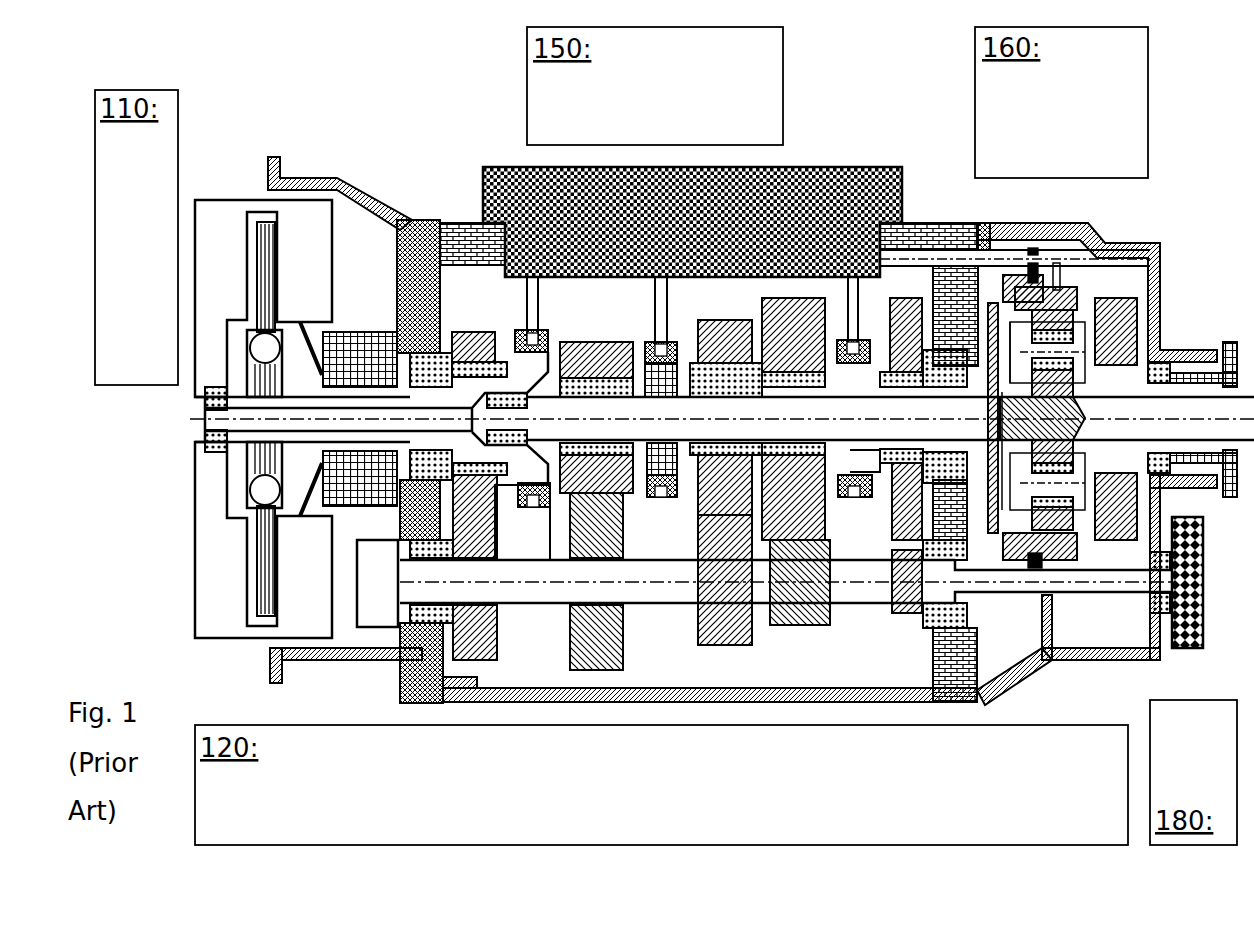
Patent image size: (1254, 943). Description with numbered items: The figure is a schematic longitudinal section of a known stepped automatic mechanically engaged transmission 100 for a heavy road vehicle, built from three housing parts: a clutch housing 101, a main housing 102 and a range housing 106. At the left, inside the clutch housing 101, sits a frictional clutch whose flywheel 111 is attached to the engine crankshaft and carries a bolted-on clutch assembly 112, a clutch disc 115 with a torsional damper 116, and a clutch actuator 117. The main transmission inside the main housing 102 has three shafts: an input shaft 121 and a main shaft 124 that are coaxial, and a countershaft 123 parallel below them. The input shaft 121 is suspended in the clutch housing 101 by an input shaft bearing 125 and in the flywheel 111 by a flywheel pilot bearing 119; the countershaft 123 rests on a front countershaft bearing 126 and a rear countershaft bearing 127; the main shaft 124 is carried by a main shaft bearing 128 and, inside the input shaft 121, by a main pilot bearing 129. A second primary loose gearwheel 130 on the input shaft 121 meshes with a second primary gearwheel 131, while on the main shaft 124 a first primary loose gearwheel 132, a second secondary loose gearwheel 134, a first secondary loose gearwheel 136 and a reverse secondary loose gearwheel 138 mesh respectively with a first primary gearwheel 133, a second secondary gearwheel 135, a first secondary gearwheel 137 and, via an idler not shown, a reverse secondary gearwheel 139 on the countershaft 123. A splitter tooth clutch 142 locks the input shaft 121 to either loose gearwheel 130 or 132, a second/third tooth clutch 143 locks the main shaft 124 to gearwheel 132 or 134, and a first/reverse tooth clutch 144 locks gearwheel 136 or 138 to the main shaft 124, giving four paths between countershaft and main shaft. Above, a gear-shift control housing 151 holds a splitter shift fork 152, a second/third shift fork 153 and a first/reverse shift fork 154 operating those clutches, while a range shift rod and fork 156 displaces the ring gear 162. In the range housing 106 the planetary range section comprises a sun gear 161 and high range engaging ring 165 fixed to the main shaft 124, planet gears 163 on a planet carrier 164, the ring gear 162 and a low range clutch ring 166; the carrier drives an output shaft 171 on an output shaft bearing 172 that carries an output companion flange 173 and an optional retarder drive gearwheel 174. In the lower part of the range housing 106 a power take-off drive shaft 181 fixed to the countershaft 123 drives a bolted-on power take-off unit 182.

The stepped automatic mechanically engaged transmission 100 is at (715, 368).
The clutch housing 101 is at (714, 381).
The main housing 102 is at (715, 161).
The range housing 106 is at (953, 270).
The flywheel 111 is at (264, 399).
The clutch assembly 112 is at (225, 262).
The clutch disc 115 is at (196, 419).
The torsional damper 116 is at (200, 399).
The clutch actuator 117 is at (257, 419).
The flywheel pilot bearing 119 is at (172, 419).
The input shaft 121 is at (342, 656).
The countershaft 123 is at (729, 588).
The main shaft 124 is at (984, 611).
The input shaft bearing 125 is at (393, 562).
The front countershaft bearing 126 is at (404, 682).
The rear countershaft bearing 127 is at (956, 652).
The main shaft bearing 128 is at (786, 666).
The main pilot bearing 129 is at (511, 612).
The second primary loose gearwheel 130 is at (458, 552).
The second primary gearwheel 131 is at (469, 715).
The first primary loose gearwheel 132 is at (603, 557).
The first primary gearwheel 133 is at (596, 659).
The second secondary loose gearwheel 134 is at (727, 546).
The second secondary gearwheel 135 is at (720, 670).
The first secondary loose gearwheel 136 is at (795, 535).
The first secondary gearwheel 137 is at (791, 682).
The reverse secondary loose gearwheel 138 is at (913, 535).
The reverse secondary gearwheel 139 is at (896, 687).
The splitter tooth clutch 142 is at (550, 627).
The second/third tooth clutch 143 is at (672, 567).
The first/reverse tooth clutch 144 is at (860, 623).
The gear-shift control housing 151 is at (692, 162).
The splitter shift fork 152 is at (553, 221).
The second/third shift fork 153 is at (677, 226).
The first/reverse shift fork 154 is at (799, 226).
The range shift rod and fork 156 is at (972, 178).
The sun gear 161 is at (1063, 303).
The ring gear 162 is at (1043, 303).
The planet gears 163 is at (1060, 310).
The planet carrier 164 is at (1074, 278).
The high range engaging ring 165 is at (1009, 332).
The low range clutch ring 166 is at (1028, 329).
The output shaft 171 is at (1198, 298).
The output shaft bearing 172 is at (1101, 358).
The output companion flange 173 is at (1214, 358).
The retarder drive gearwheel 174 is at (1175, 351).
The power take-off drive shaft 181 is at (1129, 687).
The power take-off unit 182 is at (1194, 637).